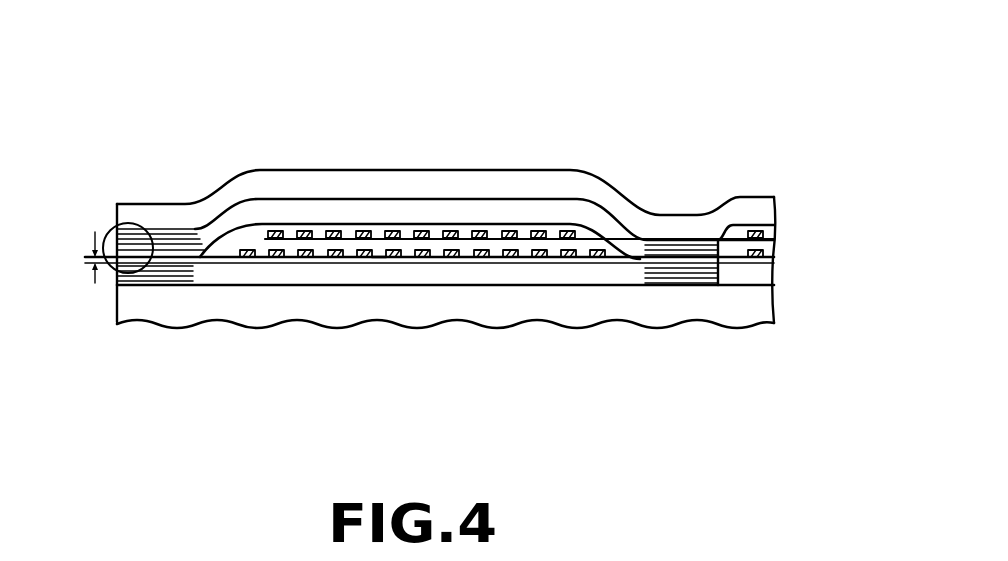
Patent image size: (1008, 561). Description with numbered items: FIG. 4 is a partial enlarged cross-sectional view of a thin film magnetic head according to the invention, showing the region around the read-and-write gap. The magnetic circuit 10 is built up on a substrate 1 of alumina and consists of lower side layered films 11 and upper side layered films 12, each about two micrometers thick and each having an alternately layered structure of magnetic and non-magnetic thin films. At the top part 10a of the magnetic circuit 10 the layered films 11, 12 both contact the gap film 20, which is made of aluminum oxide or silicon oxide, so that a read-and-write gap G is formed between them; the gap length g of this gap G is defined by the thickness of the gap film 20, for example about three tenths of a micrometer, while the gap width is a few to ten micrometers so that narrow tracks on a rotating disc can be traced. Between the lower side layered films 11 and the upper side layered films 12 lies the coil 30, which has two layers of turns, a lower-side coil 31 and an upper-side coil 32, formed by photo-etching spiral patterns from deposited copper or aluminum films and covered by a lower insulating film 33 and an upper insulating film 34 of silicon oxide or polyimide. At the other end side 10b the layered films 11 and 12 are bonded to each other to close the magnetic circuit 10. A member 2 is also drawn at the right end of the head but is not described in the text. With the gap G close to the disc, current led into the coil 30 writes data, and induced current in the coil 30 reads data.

The substrate 1 is at (130, 308).
The circuit board 2 is at (742, 197).
The magnetic circuit 10 is at (445, 173).
The top part 10a is at (138, 203).
The other end side 10b is at (676, 265).
The lower side layered films 11 is at (168, 273).
The upper side layered films 12 is at (197, 242).
The gap film 20 is at (220, 258).
The coil 30 is at (429, 172).
The lower-side coil 31 is at (500, 250).
The upper-side coil 32 is at (480, 233).
The lower insulating film 33 is at (377, 258).
The upper insulating film 34 is at (462, 232).
The read-and-write gap G is at (110, 231).
The gap length g is at (86, 259).